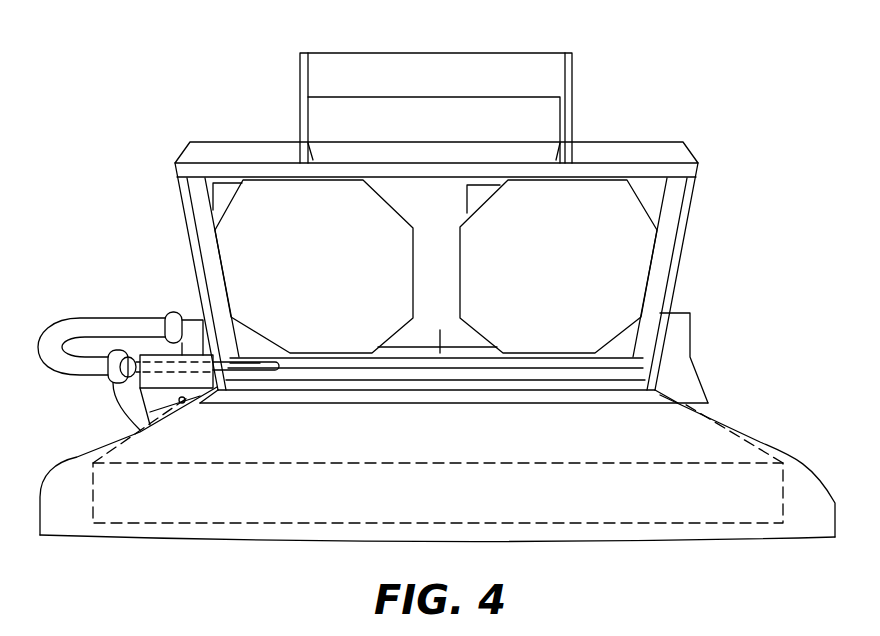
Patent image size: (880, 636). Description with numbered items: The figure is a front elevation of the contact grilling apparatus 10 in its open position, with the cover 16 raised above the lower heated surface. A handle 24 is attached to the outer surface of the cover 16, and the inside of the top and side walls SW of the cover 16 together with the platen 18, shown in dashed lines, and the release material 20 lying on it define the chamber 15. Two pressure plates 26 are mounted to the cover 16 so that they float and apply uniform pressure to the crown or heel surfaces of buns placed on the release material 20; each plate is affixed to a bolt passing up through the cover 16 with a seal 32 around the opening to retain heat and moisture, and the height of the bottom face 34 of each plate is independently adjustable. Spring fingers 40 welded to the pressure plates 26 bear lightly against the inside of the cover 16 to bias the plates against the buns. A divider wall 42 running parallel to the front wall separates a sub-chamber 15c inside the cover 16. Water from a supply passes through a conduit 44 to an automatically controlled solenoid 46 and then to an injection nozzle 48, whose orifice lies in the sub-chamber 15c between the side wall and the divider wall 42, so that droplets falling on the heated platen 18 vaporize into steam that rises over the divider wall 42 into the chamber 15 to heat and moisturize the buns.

The contact grilling apparatus 10 is at (143, 113).
The cover 16 is at (233, 152).
The handle 24 is at (513, 65).
The chamber 15 is at (425, 205).
The seal 32 is at (610, 173).
The spring fingers 40 is at (222, 190).
The pressure plate 26 is at (297, 279).
The divider wall 42 is at (440, 353).
The injection nozzle 48 is at (258, 368).
The bottom face 34 is at (645, 272).
The side wall SW is at (182, 247).
The conduit 44 is at (95, 330).
The solenoid 46 is at (135, 405).
The sub-chamber 15c is at (627, 373).
The release material 20 is at (717, 442).
The platen 18 is at (217, 493).